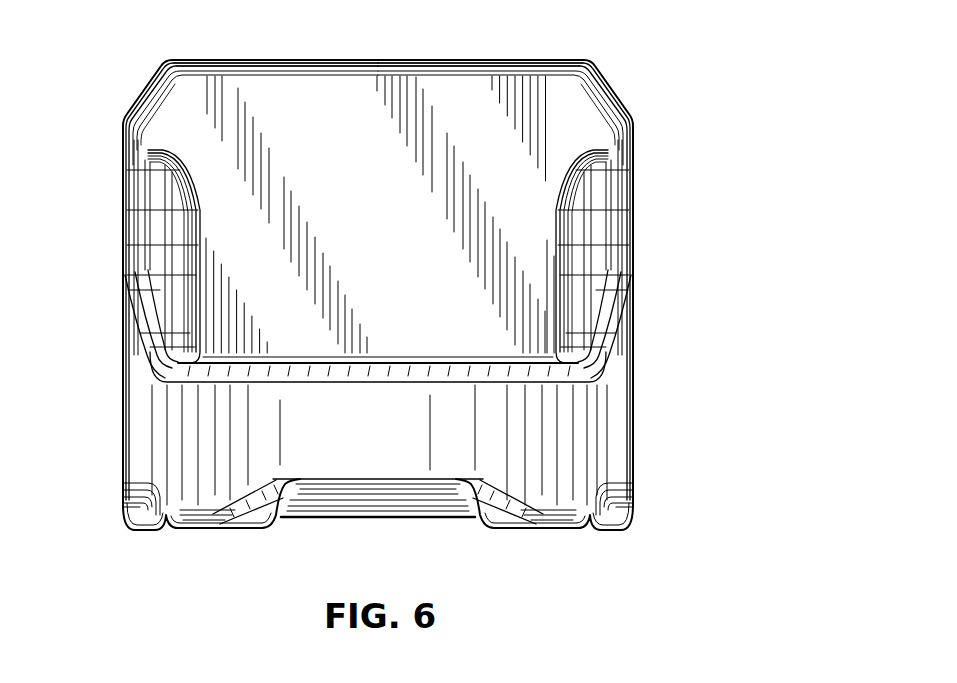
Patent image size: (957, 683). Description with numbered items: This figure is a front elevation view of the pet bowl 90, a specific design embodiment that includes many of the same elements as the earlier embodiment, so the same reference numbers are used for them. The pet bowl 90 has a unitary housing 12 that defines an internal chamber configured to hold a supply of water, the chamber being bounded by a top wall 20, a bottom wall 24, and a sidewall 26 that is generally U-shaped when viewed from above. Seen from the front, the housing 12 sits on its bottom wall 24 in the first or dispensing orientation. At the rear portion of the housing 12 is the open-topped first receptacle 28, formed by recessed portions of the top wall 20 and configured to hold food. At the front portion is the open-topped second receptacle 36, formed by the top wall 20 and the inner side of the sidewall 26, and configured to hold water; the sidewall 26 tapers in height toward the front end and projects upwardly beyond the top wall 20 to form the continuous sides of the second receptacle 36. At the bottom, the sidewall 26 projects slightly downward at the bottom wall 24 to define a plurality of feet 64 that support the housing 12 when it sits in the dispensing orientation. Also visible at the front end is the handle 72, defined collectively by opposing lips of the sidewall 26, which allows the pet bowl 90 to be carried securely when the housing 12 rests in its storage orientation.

The pet bowl 90 is at (78, 97).
The housing 12 is at (154, 417).
The top wall 20 is at (531, 58).
The first receptacle 28 is at (334, 58).
The second receptacle 36 is at (389, 348).
The sidewall 26 is at (130, 262).
The feet 64 is at (230, 530).
The bottom wall 24 is at (303, 514).
The handle 72 is at (387, 490).